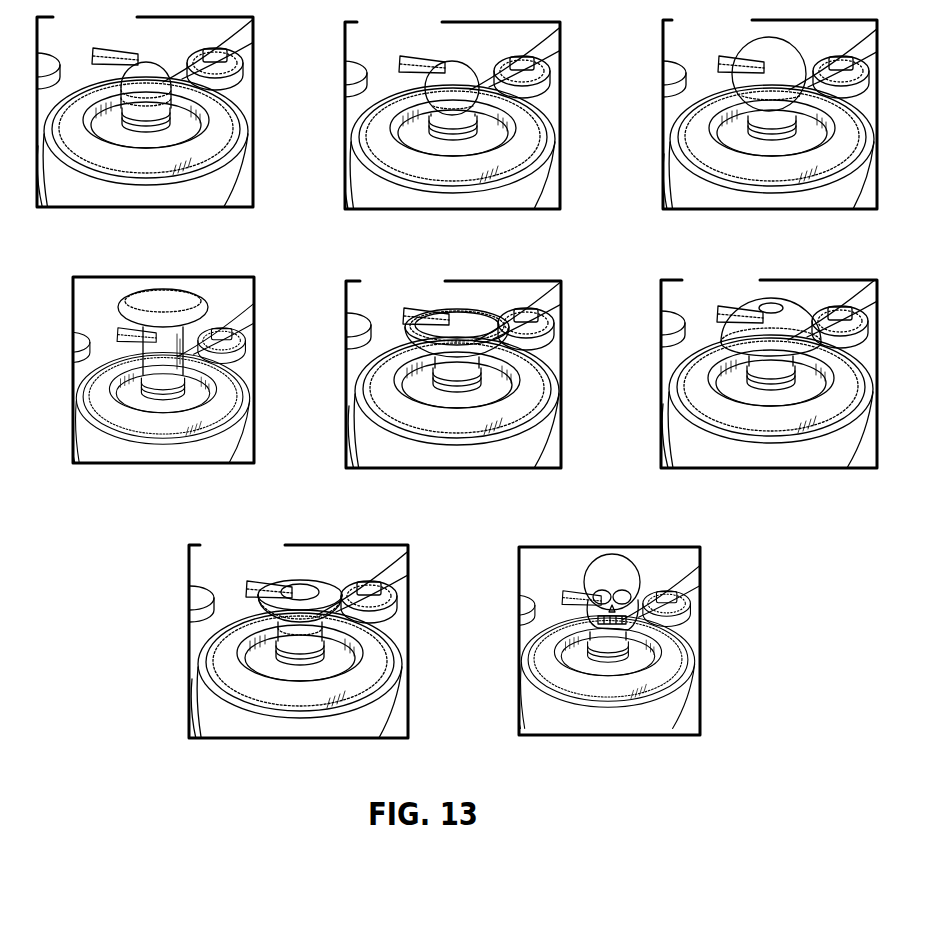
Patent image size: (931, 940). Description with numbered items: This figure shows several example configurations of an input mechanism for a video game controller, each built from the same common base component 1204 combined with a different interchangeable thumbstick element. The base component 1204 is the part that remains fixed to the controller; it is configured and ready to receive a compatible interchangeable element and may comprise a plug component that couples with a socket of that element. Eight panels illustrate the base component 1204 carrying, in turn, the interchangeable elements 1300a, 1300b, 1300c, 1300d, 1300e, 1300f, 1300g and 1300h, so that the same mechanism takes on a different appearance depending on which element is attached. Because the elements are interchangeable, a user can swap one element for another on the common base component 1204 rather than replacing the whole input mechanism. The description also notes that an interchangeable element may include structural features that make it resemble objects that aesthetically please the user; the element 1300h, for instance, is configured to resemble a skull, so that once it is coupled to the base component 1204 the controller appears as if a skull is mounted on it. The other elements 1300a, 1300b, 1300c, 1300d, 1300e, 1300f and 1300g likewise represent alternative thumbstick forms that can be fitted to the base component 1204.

The base component 1204 is at (458, 376).
The interchangeable element 1300a is at (142, 65).
The interchangeable element 1300b is at (456, 66).
The interchangeable element 1300c is at (765, 53).
The interchangeable element 1300d is at (163, 300).
The interchangeable element 1300e is at (452, 313).
The interchangeable element 1300f is at (767, 307).
The interchangeable element 1300g is at (292, 583).
The interchangeable element 1300h is at (612, 567).